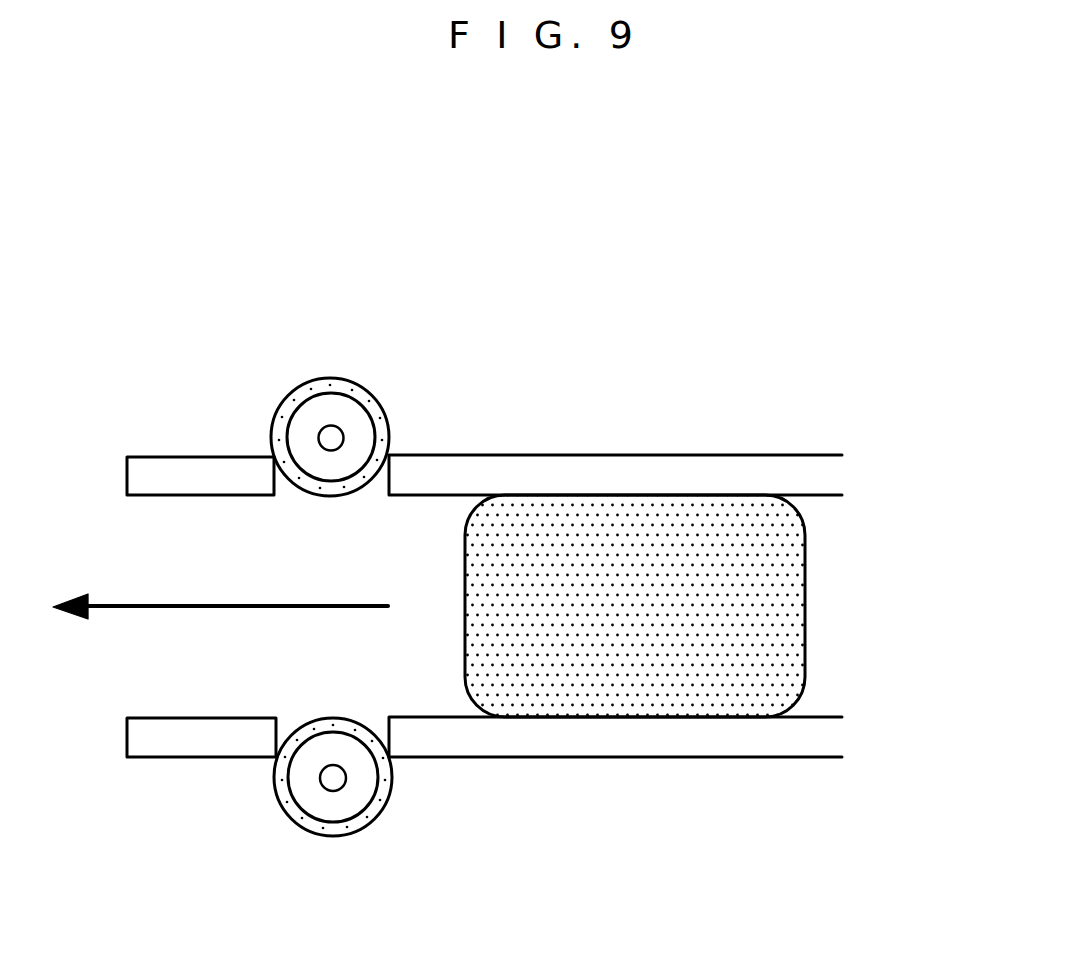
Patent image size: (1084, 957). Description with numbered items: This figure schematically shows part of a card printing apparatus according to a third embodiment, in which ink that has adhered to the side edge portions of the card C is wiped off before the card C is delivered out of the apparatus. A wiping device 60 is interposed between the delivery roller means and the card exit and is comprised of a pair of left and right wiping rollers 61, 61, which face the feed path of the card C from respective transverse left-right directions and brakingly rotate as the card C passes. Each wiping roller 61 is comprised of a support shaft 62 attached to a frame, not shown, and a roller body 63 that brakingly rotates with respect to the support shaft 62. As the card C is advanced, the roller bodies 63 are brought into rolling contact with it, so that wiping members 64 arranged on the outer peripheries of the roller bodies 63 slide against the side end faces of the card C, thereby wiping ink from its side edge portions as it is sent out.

The wiping device 60 is at (369, 288).
The wiping roller 61 is at (362, 388).
The support shaft 62 is at (334, 438).
The roller body 63 is at (324, 461).
The wiping member 64 is at (388, 433).
The card C is at (805, 602).